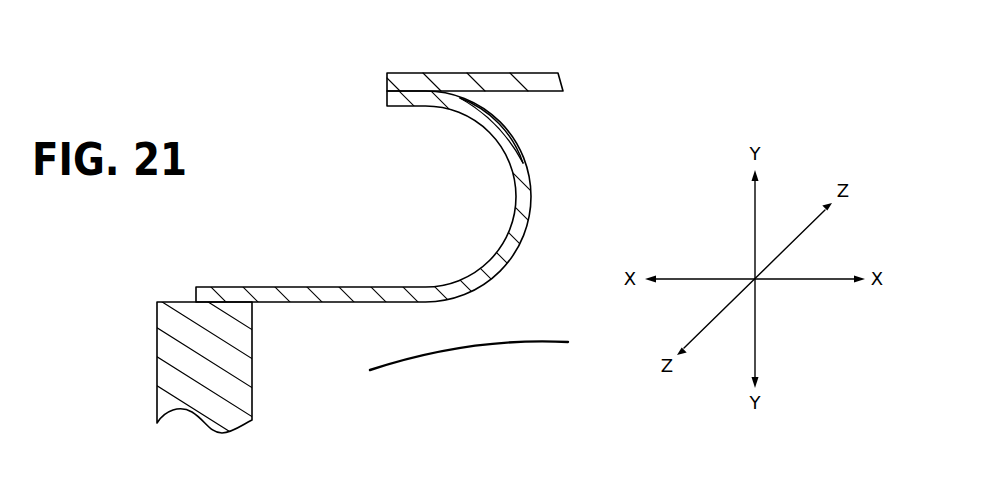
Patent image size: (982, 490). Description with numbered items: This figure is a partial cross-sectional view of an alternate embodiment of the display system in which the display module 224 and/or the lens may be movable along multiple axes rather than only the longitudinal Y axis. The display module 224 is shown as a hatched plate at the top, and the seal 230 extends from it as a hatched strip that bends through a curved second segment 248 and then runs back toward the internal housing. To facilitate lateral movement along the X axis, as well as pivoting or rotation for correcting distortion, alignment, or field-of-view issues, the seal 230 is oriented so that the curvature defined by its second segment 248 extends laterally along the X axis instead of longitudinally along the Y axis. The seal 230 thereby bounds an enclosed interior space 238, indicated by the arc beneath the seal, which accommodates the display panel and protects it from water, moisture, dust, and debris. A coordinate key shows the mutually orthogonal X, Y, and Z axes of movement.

The display module 224 is at (503, 66).
The seal 230 is at (534, 200).
The second segment 248 is at (525, 168).
The interior space 238 is at (487, 347).